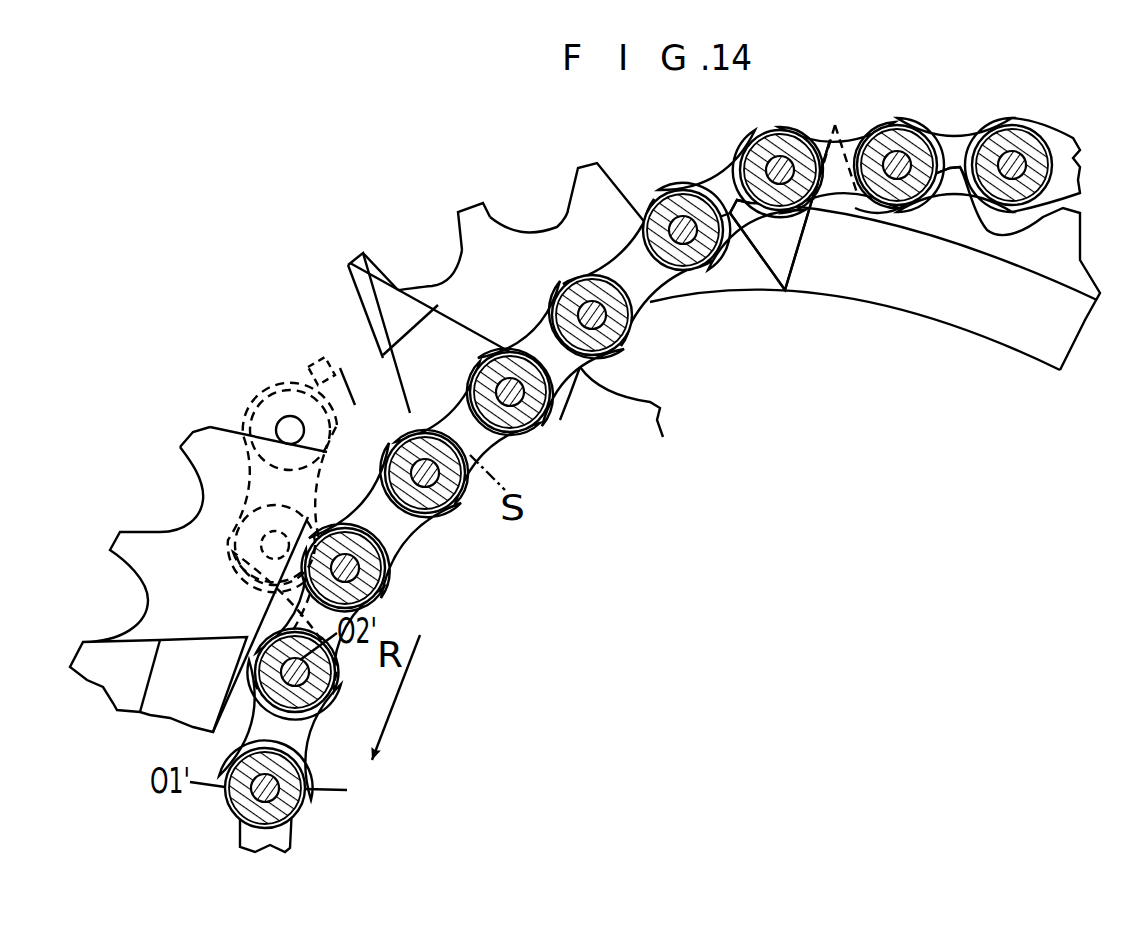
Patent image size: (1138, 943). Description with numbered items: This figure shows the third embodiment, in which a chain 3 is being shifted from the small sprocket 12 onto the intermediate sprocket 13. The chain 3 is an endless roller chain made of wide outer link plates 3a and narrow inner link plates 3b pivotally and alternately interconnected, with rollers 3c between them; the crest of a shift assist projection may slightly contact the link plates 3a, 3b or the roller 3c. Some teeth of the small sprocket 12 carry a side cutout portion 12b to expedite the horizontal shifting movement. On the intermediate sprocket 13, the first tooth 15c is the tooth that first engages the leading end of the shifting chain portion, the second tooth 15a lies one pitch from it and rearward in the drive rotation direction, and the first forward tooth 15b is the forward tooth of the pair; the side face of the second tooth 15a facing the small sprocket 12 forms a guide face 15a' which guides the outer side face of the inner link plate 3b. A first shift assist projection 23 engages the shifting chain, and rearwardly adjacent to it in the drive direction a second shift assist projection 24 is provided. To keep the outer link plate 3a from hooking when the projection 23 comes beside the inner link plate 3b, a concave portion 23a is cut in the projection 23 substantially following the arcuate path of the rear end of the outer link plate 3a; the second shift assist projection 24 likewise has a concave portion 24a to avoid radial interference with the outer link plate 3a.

The chain 3 is at (1035, 122).
The outer link plate 3a is at (705, 205).
The inner link plate 3b is at (850, 187).
The roller 3c is at (630, 247).
The small sprocket 12 is at (635, 390).
The side cutout portion 12b is at (478, 447).
The intermediate sprocket 13 is at (930, 335).
The second tooth 15a is at (546, 249).
The guide face 15a' is at (635, 187).
The first forward tooth 15b is at (587, 165).
The first tooth 15c is at (467, 207).
The first shift assist projection 23 is at (320, 365).
The concave portion 23a is at (378, 414).
The second shift assist projection 24 is at (737, 190).
The concave portion 24a is at (750, 262).